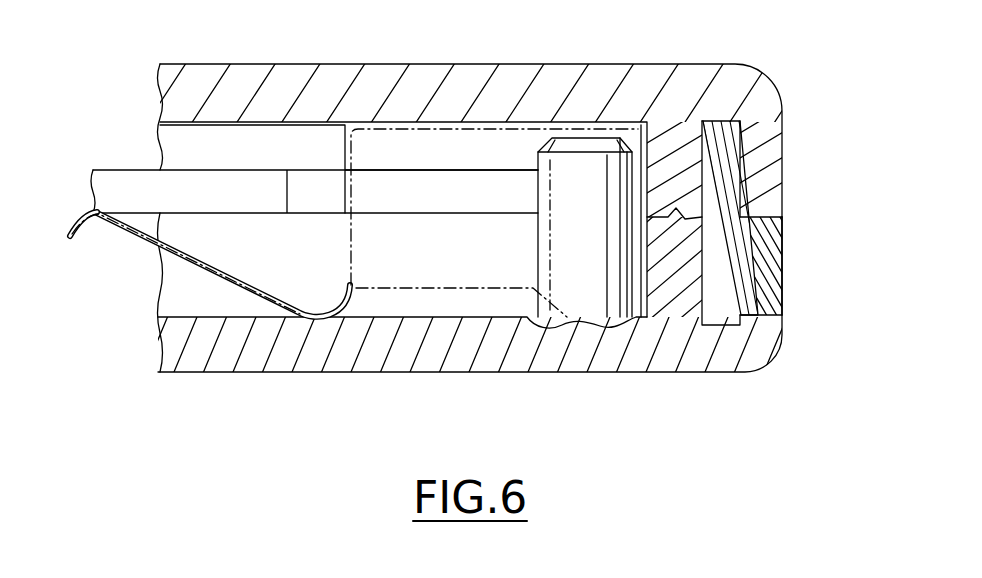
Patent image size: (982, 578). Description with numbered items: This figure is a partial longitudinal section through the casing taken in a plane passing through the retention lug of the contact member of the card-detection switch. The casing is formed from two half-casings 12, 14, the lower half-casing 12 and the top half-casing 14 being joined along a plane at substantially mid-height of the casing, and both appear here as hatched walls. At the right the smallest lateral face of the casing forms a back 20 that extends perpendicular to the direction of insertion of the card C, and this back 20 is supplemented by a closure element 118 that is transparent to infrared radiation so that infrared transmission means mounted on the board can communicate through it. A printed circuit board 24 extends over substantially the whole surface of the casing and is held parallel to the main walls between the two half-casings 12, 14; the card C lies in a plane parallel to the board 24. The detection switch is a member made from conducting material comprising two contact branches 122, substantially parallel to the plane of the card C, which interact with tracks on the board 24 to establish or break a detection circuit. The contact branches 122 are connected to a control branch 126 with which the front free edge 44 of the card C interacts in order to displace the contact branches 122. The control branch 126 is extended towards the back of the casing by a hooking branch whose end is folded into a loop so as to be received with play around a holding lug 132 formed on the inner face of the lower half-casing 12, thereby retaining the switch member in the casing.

The half-casing 12 is at (468, 350).
The half-casing 14 is at (775, 96).
The back 20 is at (787, 266).
The printed circuit board 24 is at (314, 191).
The front free edge 44 is at (345, 143).
The closure element 118 is at (757, 287).
The contact branches 122 is at (222, 270).
The control branch 126 is at (352, 153).
The holding lug 132 is at (585, 227).
The card C is at (212, 150).